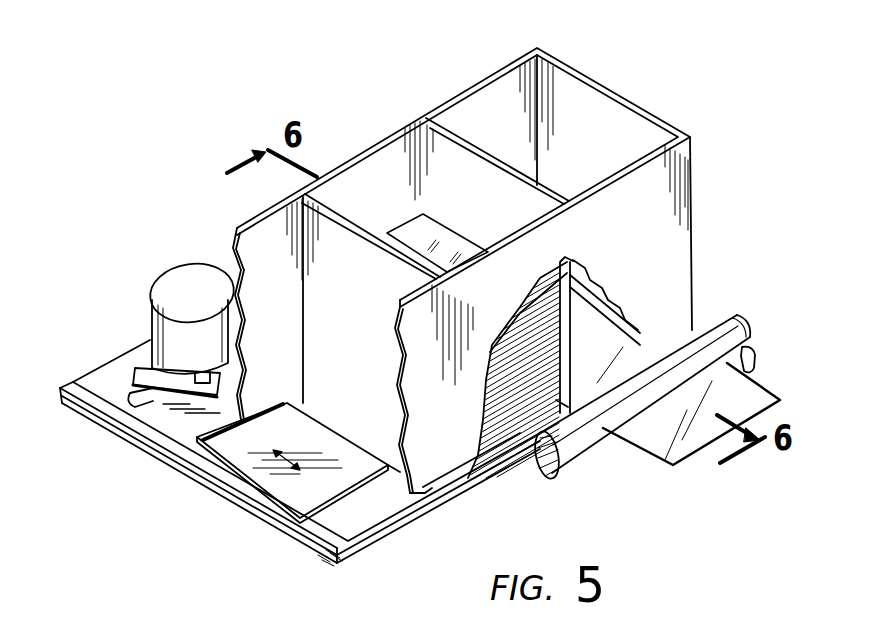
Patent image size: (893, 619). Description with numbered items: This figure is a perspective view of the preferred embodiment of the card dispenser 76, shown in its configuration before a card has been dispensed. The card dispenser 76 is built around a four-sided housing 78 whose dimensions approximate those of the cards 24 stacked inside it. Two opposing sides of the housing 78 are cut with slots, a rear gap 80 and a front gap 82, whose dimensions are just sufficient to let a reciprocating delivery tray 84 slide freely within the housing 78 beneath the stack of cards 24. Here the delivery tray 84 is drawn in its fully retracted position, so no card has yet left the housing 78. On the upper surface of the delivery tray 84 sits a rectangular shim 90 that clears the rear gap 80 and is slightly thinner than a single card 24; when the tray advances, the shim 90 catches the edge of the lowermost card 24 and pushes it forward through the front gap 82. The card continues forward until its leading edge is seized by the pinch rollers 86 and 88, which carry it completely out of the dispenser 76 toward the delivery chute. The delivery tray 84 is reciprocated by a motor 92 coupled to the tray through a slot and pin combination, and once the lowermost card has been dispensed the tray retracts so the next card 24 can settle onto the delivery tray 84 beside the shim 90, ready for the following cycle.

The cards 24 is at (412, 232).
The card dispenser 76 is at (433, 72).
The four-sided housing 78 is at (502, 68).
The rear gap 80 is at (287, 402).
The front gap 82 is at (415, 487).
The delivery tray 84 is at (163, 420).
The pinch roller 86 is at (750, 330).
The pinch roller 88 is at (755, 360).
The rectangular shim 90 is at (213, 437).
The motor 92 is at (183, 273).